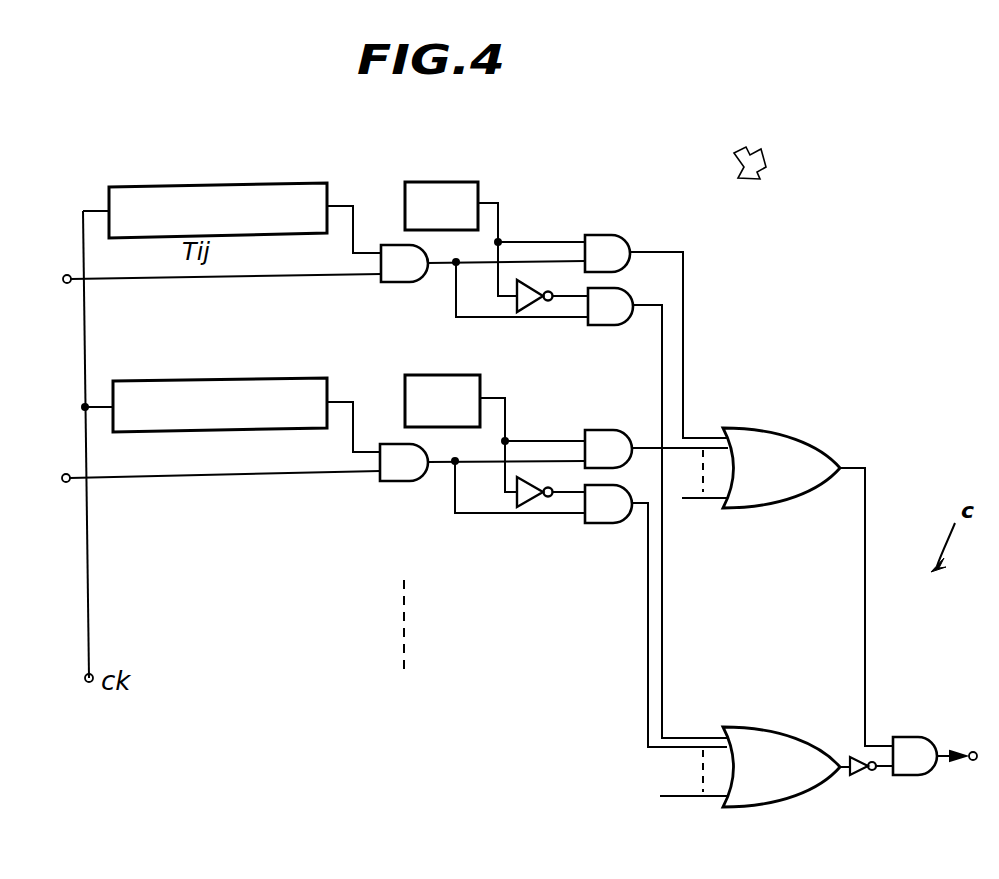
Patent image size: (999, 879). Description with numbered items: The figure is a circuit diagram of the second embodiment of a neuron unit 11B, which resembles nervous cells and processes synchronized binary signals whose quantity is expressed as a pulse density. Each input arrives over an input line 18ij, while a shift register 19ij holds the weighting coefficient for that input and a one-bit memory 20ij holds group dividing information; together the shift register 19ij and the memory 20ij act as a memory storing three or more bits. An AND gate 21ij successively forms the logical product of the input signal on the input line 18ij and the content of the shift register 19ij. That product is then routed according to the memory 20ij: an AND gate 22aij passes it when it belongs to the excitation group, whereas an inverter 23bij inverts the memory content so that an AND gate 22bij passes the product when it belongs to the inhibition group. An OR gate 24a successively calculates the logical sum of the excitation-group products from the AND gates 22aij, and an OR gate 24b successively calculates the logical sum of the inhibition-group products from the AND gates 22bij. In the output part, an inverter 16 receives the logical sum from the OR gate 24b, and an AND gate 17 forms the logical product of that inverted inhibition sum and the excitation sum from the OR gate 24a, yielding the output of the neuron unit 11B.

The neuron unit 11B is at (768, 145).
The inverter 16 is at (857, 757).
The AND gate 17 is at (918, 737).
The input lines 18ij is at (203, 281).
The shift registers 19ij is at (217, 184).
The 1-bit memories 20ij is at (435, 181).
The AND gates 21ij is at (393, 245).
The AND gates 22aij is at (598, 235).
The AND gates 22bij is at (600, 326).
The inverters 23bij is at (532, 313).
The OR gate 24a is at (770, 428).
The OR gate 24b is at (763, 725).